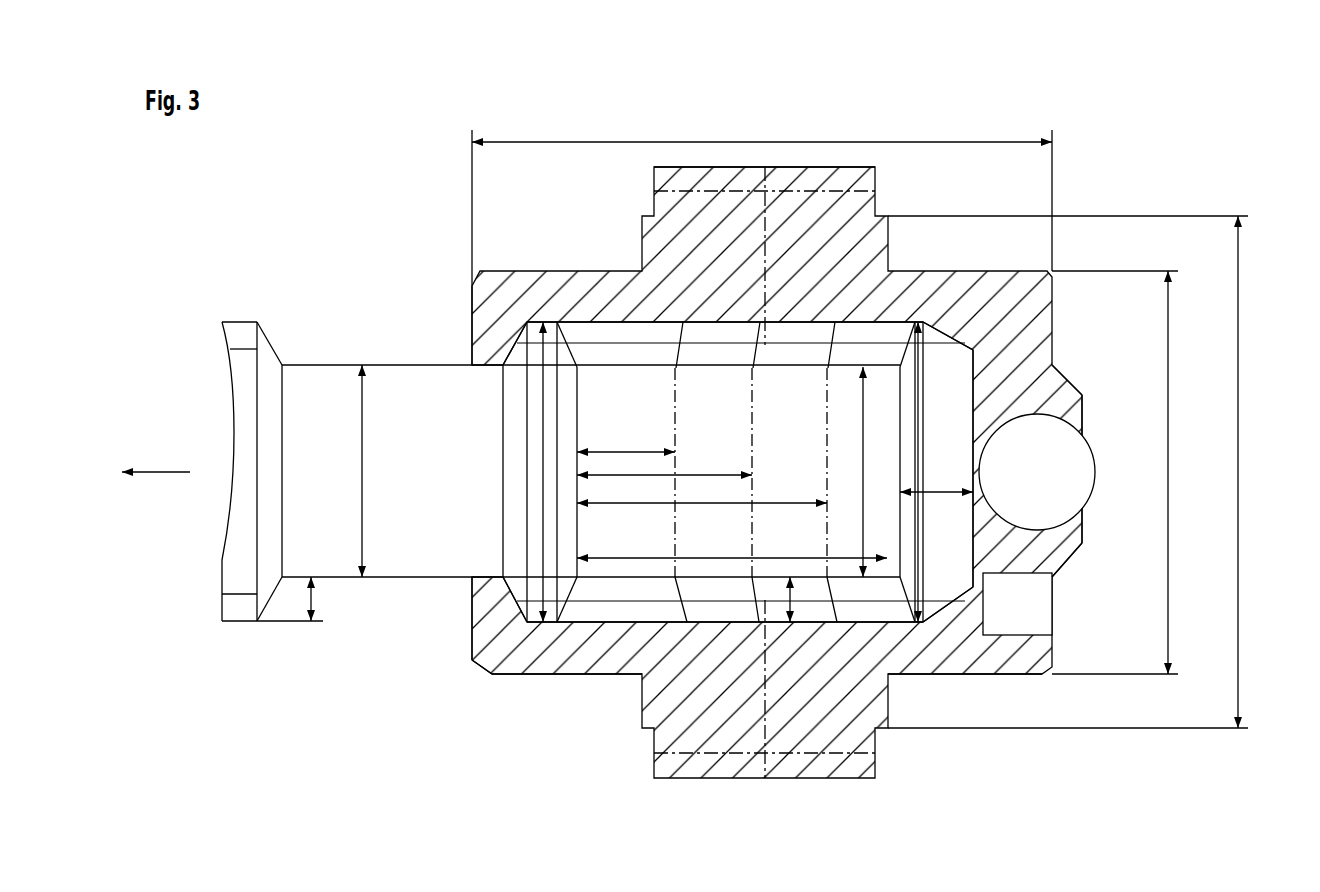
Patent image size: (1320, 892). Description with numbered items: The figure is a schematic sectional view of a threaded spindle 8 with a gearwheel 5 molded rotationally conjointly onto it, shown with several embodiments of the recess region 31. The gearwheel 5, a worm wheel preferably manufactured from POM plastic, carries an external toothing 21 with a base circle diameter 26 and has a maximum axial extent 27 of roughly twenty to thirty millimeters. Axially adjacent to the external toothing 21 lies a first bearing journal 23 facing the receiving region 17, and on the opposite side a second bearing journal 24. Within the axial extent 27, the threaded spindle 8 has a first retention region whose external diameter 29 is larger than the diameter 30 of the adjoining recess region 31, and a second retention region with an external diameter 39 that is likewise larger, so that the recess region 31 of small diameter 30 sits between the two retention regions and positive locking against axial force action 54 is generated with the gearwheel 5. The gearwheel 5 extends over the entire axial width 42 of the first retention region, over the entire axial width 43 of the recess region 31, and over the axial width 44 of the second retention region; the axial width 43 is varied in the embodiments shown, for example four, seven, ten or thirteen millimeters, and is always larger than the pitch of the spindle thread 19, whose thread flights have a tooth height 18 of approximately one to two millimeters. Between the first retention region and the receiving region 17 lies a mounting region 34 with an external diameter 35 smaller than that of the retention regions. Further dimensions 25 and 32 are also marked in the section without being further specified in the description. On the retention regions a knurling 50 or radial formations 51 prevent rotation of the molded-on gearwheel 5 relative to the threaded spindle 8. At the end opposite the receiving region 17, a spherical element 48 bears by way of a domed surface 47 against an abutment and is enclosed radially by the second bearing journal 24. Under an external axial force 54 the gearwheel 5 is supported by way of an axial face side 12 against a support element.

The gearwheel 5 is at (855, 248).
The threaded spindle 8 is at (309, 273).
The axial face side 12 is at (470, 620).
The receiving region 17 is at (242, 563).
The tooth height 18 is at (311, 600).
The spindle thread 19 is at (240, 335).
The external toothing 21 is at (821, 167).
The first bearing journal 23 is at (527, 650).
The second bearing journal 24 is at (1018, 657).
The housing height dimension 25 is at (1168, 363).
The base circle diameter 26 is at (1238, 523).
The axial extent 27 is at (707, 166).
The external diameter 29 is at (533, 525).
The diameter 30 is at (863, 407).
The recess region 31 is at (598, 382).
The gap dimension 32 is at (790, 598).
The mounting region 34 is at (387, 545).
The external diameter 35 is at (362, 472).
The external diameter 39 is at (920, 390).
The axial width 42 is at (533, 420).
The axial width 43 is at (620, 452).
The axial width 44 is at (937, 493).
The domed surface 47 is at (1096, 495).
The spherical element 48 is at (1058, 442).
The knurling 50 is at (532, 320).
The radial formations 51 is at (515, 472).
The axial force action 54 is at (160, 470).